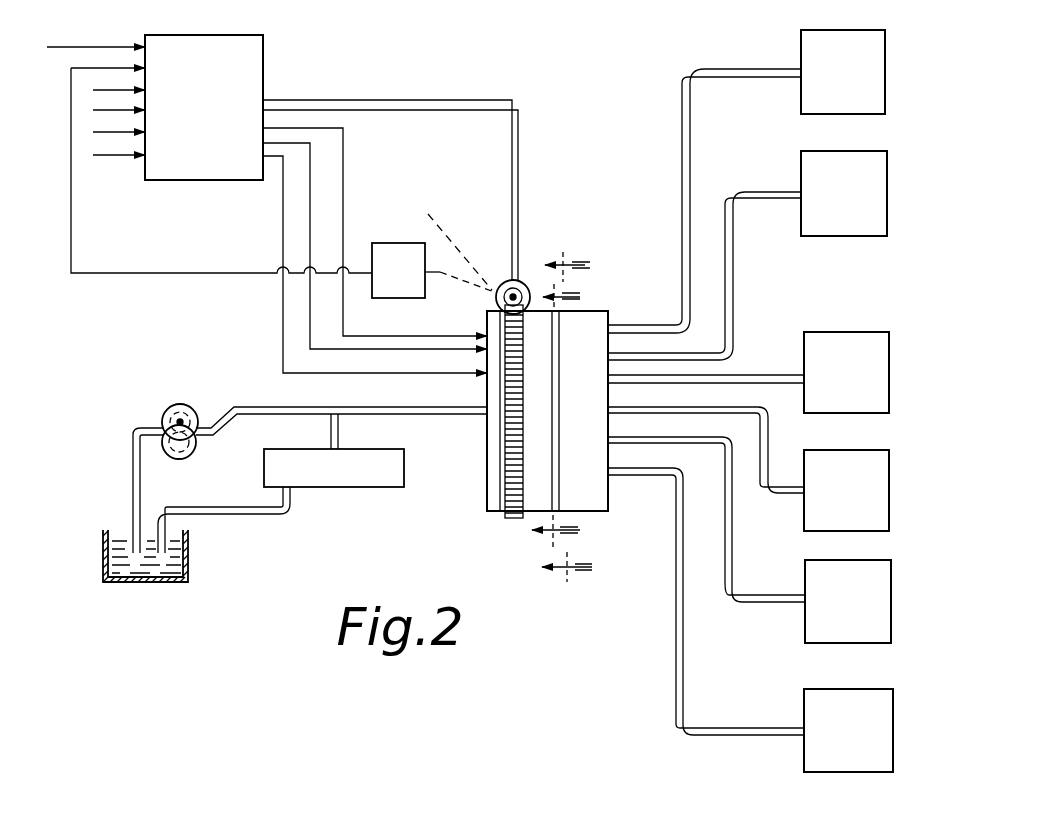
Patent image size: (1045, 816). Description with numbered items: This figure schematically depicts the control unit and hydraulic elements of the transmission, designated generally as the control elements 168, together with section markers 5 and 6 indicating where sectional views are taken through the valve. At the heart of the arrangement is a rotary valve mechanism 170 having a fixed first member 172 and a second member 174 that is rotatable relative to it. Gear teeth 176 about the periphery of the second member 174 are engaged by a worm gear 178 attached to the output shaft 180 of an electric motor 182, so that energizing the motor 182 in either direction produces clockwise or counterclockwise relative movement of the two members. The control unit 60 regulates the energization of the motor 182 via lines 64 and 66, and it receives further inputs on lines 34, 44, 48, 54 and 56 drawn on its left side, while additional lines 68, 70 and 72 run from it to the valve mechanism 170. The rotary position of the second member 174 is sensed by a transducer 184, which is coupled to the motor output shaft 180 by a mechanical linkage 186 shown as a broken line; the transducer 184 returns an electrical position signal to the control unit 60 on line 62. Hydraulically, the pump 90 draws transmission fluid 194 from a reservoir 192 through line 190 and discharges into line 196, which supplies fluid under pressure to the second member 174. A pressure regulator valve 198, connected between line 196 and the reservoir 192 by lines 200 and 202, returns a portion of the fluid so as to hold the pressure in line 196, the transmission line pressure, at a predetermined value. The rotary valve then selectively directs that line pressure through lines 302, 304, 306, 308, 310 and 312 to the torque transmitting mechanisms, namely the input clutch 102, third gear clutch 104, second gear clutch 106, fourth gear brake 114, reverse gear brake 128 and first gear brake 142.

The sensor input line 34 is at (103, 133).
The sensor input line 44 is at (115, 158).
The sensor input line 48 is at (105, 111).
The sensor input line 54 is at (105, 90).
The input signal line 56 is at (72, 46).
The control unit 60 is at (263, 67).
The line 62 is at (238, 275).
The line 64 is at (400, 99).
The line 66 is at (468, 109).
The control line to valve block 68 is at (343, 184).
The control line to valve block 70 is at (310, 228).
The control line to valve block 72 is at (283, 197).
The pump 90 is at (172, 406).
The input clutch 102 is at (886, 90).
The third gear clutch 104 is at (888, 207).
The second gear clutch 106 is at (890, 376).
The fourth gear brake 114 is at (890, 488).
The reverse gear brake 128 is at (805, 612).
The first gear brake 142 is at (804, 750).
The control elements 168 is at (566, 90).
The rotary valve mechanism 170 is at (618, 250).
The first member 172 is at (609, 512).
The second member 174 is at (487, 506).
The gear teeth 176 is at (505, 436).
The worm gear 178 is at (506, 289).
The output shaft 180 is at (500, 297).
The electric motor 182 is at (510, 280).
The transducer 184 is at (408, 300).
The mechanical linkage 186 is at (447, 238).
The line 190 is at (131, 496).
The reservoir 192 is at (106, 556).
The transmission fluid 194 is at (190, 561).
The line 196 is at (271, 407).
The pressure regulator valve 198 is at (316, 488).
The line 200 is at (340, 432).
The line 202 is at (240, 506).
The line 302 is at (682, 152).
The line 304 is at (775, 191).
The line 306 is at (758, 374).
The line 308 is at (769, 437).
The line 310 is at (732, 510).
The line 312 is at (676, 637).
The section line 5- 5 is at (559, 418).
The section line 6- 6 is at (570, 416).